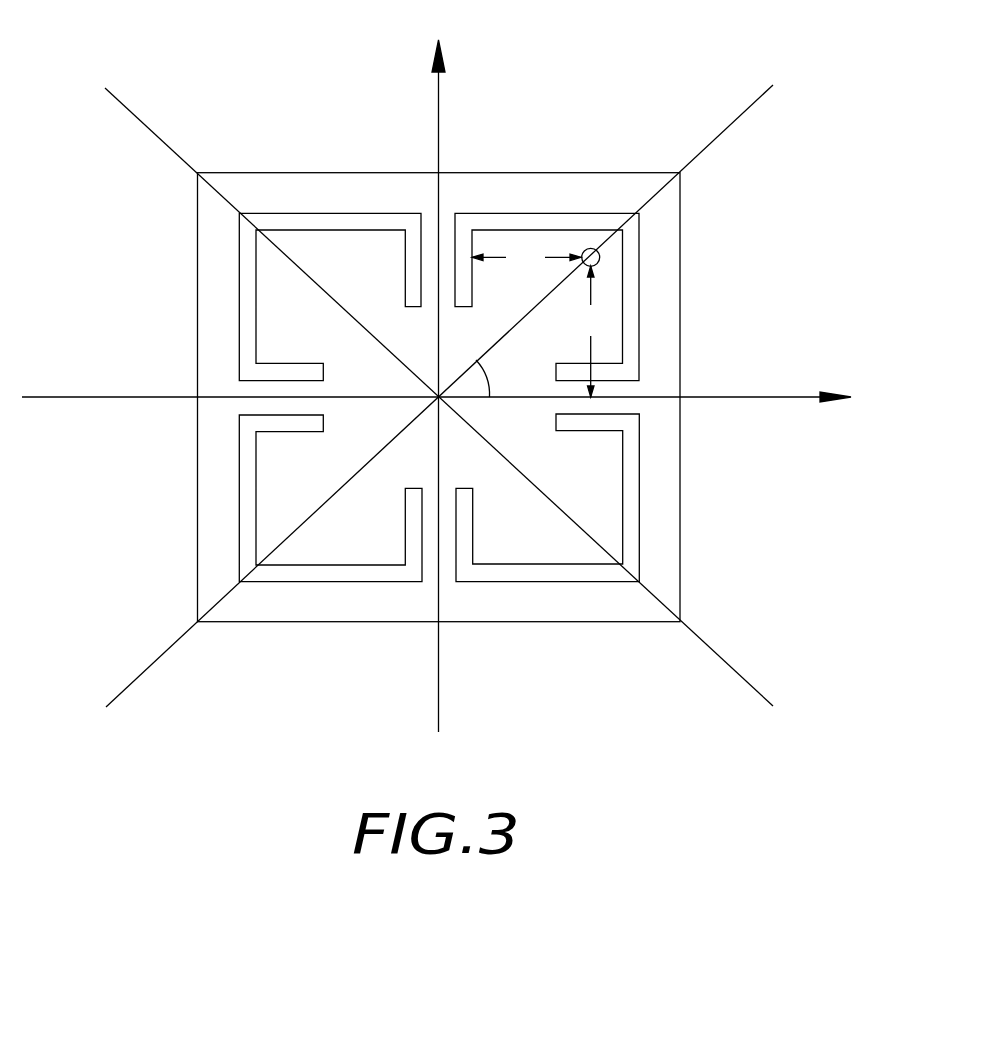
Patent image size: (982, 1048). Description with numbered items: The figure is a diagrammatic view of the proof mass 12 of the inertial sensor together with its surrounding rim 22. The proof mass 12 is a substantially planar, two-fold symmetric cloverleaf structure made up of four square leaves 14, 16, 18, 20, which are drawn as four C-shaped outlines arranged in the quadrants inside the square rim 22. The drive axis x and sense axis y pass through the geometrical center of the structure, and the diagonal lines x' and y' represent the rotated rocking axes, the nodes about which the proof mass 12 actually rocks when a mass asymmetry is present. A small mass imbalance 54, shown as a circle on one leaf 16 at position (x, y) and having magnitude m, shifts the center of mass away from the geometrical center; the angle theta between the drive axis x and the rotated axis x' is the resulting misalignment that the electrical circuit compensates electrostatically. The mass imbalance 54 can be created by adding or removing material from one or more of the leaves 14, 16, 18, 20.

The proof mass 12 is at (607, 485).
The square leaf 14 is at (331, 248).
The square leaf 16 is at (623, 343).
The square leaf 18 is at (530, 550).
The square leaf 20 is at (293, 469).
The rim 22 is at (681, 266).
The mass imbalance 54 is at (590, 248).